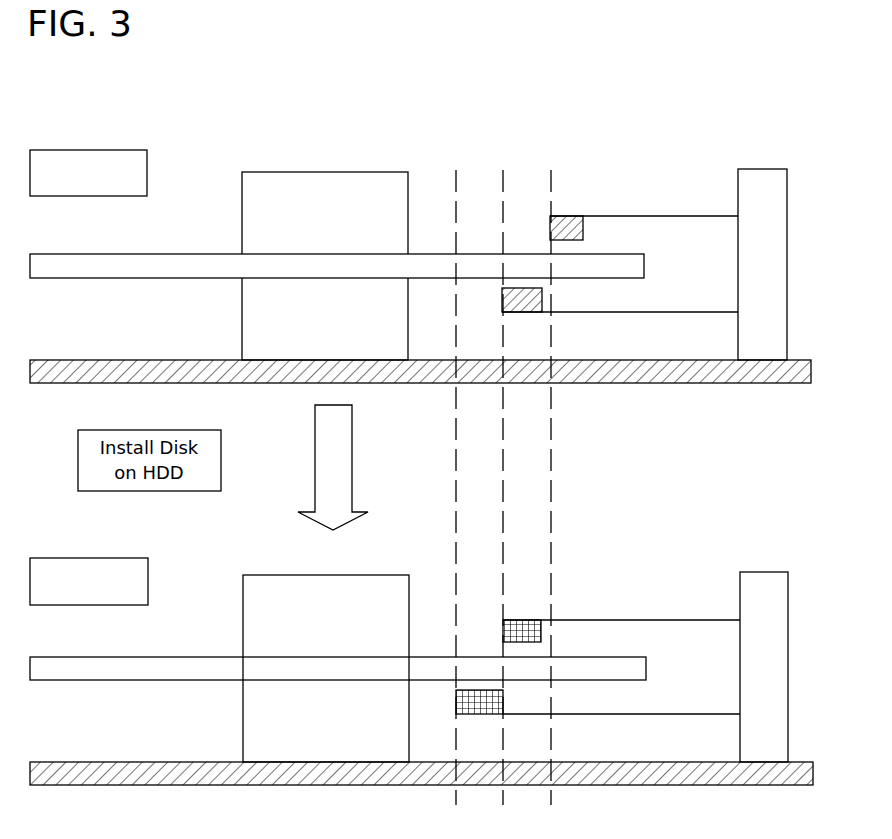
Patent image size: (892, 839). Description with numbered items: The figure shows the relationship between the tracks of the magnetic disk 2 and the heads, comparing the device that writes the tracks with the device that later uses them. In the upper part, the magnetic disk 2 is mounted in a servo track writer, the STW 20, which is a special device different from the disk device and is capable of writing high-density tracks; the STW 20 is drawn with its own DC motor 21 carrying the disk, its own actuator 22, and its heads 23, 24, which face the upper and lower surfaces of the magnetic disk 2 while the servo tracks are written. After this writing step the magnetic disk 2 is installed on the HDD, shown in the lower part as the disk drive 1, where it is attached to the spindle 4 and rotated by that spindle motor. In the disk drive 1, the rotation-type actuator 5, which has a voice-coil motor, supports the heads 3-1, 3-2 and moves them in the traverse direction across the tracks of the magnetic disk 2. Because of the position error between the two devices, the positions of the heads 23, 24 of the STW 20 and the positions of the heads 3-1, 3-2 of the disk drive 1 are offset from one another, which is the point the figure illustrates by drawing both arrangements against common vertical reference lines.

The servo track writer (STW) 20 is at (87, 150).
The DC motor of servo track writer 21 is at (338, 172).
The actuator of servo track writer 22 is at (752, 143).
The head of the STW 23 is at (562, 214).
The head of the STW 24 is at (517, 268).
The magnetic disk 2 is at (100, 254).
The disk drive 1 is at (126, 558).
The spindle 4 is at (385, 575).
The actuator 5 is at (752, 546).
The head of the disk device 3-1 is at (527, 620).
The head of the disk device 3-2 is at (477, 716).